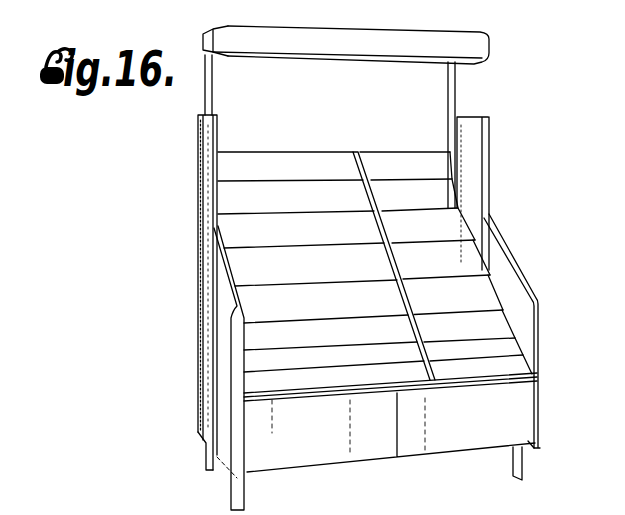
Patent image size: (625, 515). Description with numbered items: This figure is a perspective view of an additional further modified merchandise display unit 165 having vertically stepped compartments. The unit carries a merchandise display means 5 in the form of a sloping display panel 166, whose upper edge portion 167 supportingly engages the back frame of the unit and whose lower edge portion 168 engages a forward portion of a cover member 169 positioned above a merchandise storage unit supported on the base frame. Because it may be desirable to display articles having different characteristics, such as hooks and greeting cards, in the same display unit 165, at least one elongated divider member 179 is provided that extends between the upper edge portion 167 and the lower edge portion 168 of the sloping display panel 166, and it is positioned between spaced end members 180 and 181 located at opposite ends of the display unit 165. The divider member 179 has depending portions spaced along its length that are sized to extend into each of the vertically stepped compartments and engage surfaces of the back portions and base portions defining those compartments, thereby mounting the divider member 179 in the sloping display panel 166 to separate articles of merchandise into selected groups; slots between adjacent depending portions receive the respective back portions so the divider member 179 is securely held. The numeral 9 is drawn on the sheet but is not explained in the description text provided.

The display rack 9 is at (371, 440).
The merchandise display means 5 is at (331, 149).
The merchandise display unit 165 is at (198, 167).
The sloping display panel 166 is at (393, 163).
The upper edge portion 167 is at (276, 151).
The lower edge portion 168 is at (530, 383).
The cover member 169 is at (511, 375).
The divider member 179 is at (368, 202).
The end member 180 is at (224, 338).
The end member 181 is at (500, 246).